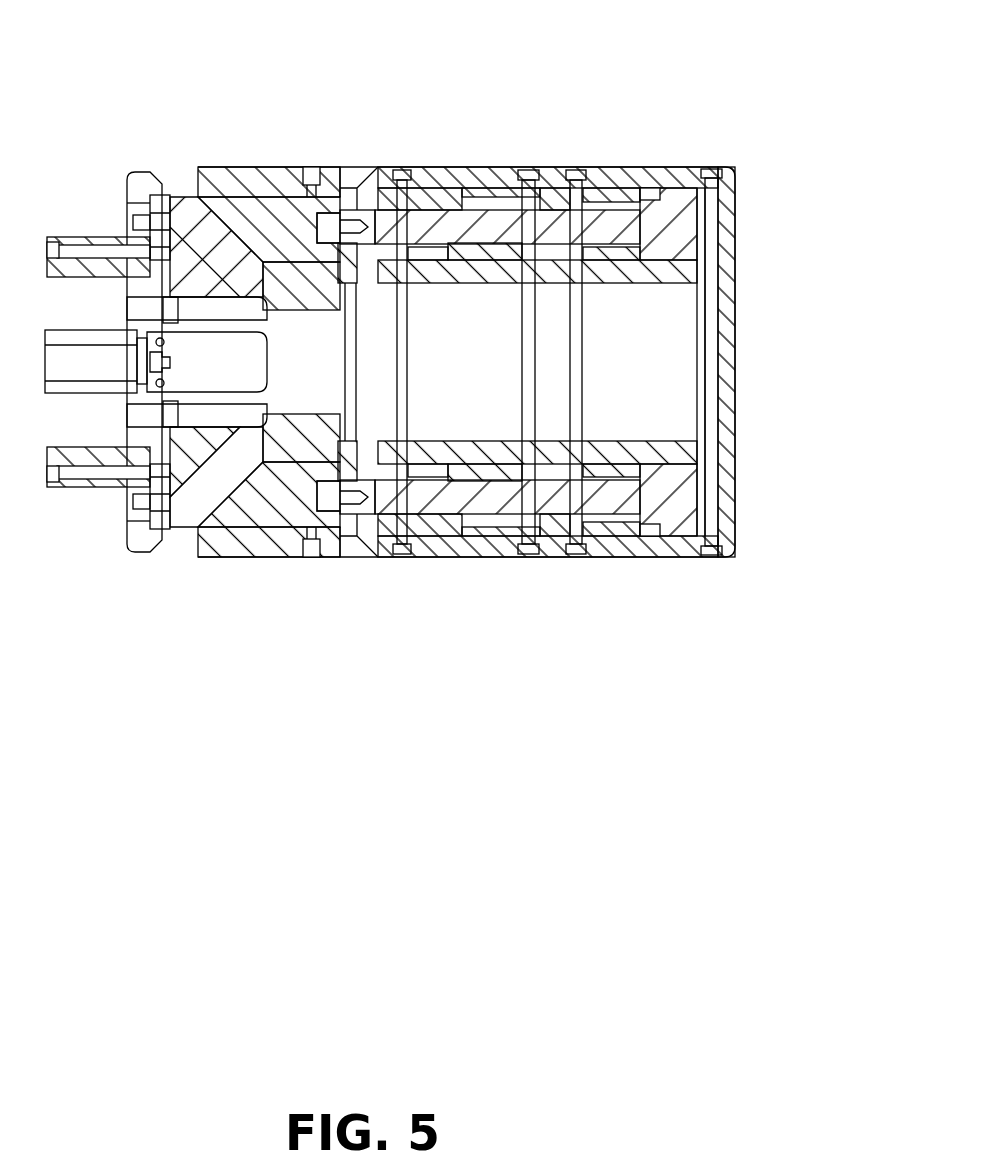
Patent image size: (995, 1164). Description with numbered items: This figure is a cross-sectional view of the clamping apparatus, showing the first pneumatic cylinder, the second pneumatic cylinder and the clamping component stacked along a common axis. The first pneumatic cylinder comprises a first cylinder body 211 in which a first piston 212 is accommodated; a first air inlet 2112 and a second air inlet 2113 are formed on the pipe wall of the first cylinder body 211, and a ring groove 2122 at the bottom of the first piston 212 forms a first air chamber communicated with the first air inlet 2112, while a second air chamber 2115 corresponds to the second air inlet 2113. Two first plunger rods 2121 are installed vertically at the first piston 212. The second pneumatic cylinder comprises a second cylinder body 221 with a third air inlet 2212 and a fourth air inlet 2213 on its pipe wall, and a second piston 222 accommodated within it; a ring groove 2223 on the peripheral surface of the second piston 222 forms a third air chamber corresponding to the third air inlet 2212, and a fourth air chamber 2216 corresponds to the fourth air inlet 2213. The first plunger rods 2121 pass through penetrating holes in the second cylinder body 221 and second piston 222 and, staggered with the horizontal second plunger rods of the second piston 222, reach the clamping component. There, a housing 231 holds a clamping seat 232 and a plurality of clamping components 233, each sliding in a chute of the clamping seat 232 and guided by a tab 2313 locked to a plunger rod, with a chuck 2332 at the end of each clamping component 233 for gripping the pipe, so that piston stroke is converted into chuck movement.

The first cylinder body 211 is at (595, 553).
The first piston 212 is at (660, 553).
The first air inlet 2112 is at (712, 167).
The second air inlet 2113 is at (572, 167).
The second air chamber 2115 is at (612, 167).
The first plunger rod 2121 is at (430, 167).
The ring groove 2122 is at (690, 167).
The second cylinder body 221 is at (478, 553).
The second piston 222 is at (485, 167).
The third air inlet 2212 is at (525, 167).
The fourth air inlet 2213 is at (400, 167).
The fourth air chamber 2216 is at (425, 553).
The ring groove 2223 is at (535, 553).
The housing 231 is at (230, 175).
The clamping seat 232 is at (283, 553).
The clamping component 233 is at (185, 215).
The tab 2313 is at (285, 200).
The chuck 2332 is at (90, 262).